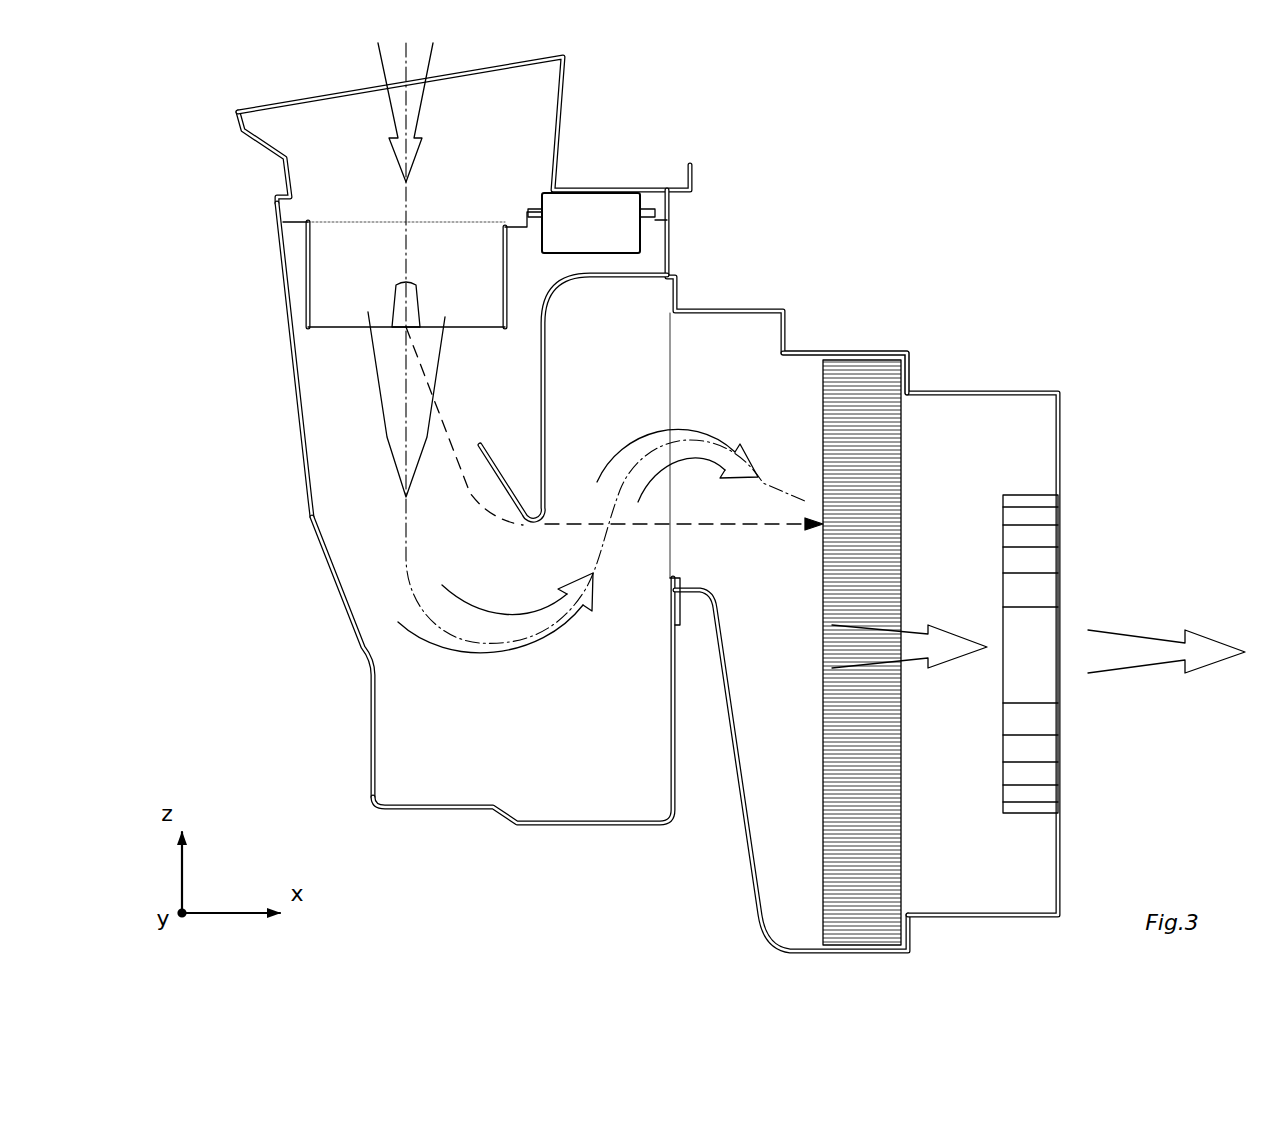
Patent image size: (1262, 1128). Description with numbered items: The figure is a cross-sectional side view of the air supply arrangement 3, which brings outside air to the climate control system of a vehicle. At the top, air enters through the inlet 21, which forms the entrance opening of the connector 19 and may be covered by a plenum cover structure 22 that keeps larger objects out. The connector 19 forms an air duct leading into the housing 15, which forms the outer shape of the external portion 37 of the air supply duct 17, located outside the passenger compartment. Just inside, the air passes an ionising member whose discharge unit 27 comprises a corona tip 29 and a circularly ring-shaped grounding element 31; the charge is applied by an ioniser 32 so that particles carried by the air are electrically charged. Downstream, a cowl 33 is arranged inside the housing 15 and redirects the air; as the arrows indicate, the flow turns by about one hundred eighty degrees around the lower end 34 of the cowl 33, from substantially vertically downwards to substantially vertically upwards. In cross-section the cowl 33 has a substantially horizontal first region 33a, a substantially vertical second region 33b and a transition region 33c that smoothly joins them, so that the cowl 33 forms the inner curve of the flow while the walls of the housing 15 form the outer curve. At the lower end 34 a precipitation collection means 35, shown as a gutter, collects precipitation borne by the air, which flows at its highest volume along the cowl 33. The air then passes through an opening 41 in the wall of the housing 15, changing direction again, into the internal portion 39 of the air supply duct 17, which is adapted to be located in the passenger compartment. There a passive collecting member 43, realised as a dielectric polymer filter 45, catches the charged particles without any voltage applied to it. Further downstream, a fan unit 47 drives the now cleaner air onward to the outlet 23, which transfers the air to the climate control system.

The air supply arrangement 3 is at (1091, 152).
The housing 15 is at (293, 405).
The air supply duct 17 is at (523, 700).
The connector 19 is at (262, 162).
The inlet 21 is at (364, 113).
The plenum cover structure 22 is at (497, 70).
The outlet 23 is at (1053, 450).
The discharge unit 27 is at (457, 211).
The corona tip 29 is at (416, 297).
The grounding element 31 is at (310, 292).
The ioniser 32 is at (597, 223).
The cowl 33 is at (556, 427).
The first region 33a is at (623, 285).
The second region 33b is at (537, 398).
The transition region 33c is at (552, 296).
The lower end 34 is at (523, 525).
The precipitation collection means 35 is at (497, 473).
The external portion 37 is at (321, 760).
The internal portion 39 is at (687, 851).
The opening 41 is at (672, 542).
The collecting member 43 is at (845, 349).
The dielectric polymer filter 45 is at (867, 445).
The fan unit 47 is at (1012, 685).